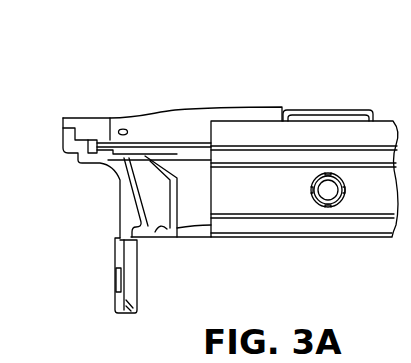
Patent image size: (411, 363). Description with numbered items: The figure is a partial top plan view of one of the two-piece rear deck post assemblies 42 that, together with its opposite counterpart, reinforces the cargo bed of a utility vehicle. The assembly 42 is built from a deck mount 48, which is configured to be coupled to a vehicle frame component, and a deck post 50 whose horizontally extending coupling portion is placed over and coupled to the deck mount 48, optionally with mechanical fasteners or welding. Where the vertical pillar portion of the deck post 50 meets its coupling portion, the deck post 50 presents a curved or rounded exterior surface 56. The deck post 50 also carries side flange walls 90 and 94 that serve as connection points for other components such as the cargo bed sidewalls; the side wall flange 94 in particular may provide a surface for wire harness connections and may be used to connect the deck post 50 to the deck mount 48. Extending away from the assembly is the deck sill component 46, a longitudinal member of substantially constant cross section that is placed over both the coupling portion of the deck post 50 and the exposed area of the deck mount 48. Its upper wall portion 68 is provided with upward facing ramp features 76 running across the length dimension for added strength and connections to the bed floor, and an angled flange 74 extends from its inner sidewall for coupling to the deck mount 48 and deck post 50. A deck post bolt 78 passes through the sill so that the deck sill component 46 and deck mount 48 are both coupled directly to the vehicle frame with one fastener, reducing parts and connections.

The two-piece rear deck post assembly 42 is at (54, 107).
The deck sill component 46 is at (241, 243).
The deck mount 48 is at (335, 110).
The deck post 50 is at (106, 193).
The curved or rounded exterior surface 56 is at (193, 187).
The upper wall portion 68 is at (288, 192).
The angled flange 74 is at (294, 133).
The upward facing ramp features 76 is at (240, 223).
The deck post bolt 78 is at (333, 193).
The side flange wall 90 is at (143, 252).
The side wall flange 94 is at (157, 130).